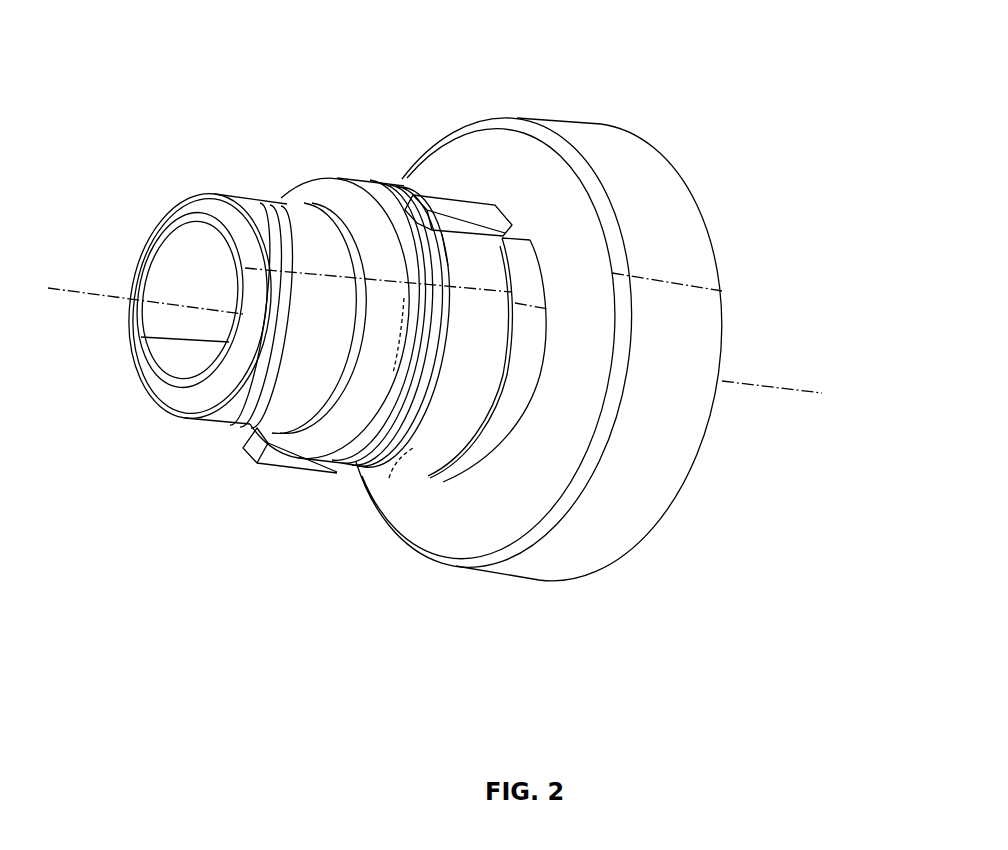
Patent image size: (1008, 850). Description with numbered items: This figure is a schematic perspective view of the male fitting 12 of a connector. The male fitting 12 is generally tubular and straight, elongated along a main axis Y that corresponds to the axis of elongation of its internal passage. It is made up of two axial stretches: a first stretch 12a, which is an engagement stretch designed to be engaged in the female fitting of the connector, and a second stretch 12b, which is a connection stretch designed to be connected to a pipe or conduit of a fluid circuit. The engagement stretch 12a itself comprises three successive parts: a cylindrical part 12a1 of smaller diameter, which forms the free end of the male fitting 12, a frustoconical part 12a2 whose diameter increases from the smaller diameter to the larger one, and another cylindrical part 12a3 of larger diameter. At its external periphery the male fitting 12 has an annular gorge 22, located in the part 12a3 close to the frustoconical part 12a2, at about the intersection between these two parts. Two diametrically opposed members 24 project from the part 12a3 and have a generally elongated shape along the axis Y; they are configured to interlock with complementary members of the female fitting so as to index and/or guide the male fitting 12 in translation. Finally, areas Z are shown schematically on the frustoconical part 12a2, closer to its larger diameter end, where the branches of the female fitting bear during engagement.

The male fitting 12 is at (463, 343).
The first stretch 12a is at (282, 369).
The cylindrical part 12a1 is at (289, 201).
The frustoconical part 12a2 is at (336, 197).
The cylindrical part 12a3 is at (373, 374).
The second stretch 12b is at (572, 595).
The annular gorge 22 is at (438, 300).
The projecting or hollow member 24 is at (440, 208).
The main axis Y is at (802, 388).
The areas Z is at (407, 335).